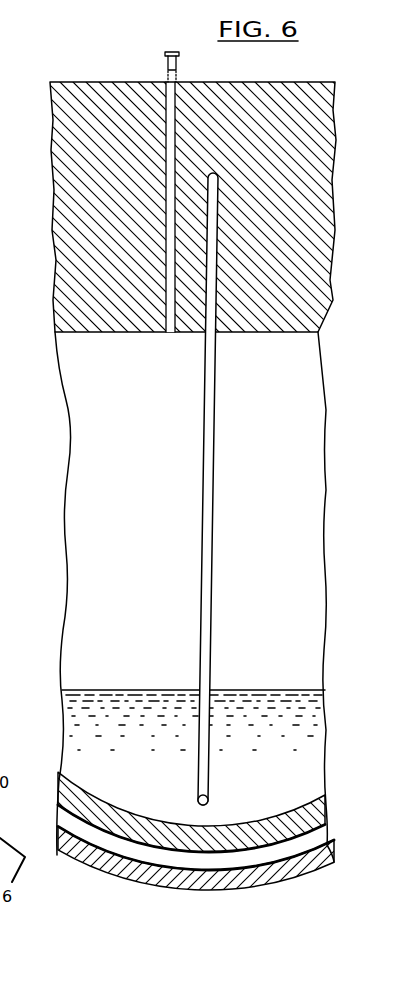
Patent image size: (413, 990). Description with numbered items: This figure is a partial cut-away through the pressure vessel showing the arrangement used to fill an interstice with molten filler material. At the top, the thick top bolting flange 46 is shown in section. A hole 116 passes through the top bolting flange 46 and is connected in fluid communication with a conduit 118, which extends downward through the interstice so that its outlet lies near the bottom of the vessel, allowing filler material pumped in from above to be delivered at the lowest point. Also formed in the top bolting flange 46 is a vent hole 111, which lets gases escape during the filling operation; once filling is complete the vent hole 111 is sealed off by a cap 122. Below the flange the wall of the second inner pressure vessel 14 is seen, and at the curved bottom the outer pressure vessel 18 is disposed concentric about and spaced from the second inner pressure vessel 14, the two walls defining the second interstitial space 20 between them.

The top bolting flange 46 is at (51, 126).
The vent hole 111 is at (166, 208).
The cap 122 is at (166, 60).
The second inner pressure vessel 14 is at (64, 537).
The hole 116 is at (218, 232).
The conduit 118 is at (213, 385).
The second interstitial space 20 is at (318, 833).
The outer pressure vessel 18 is at (175, 887).